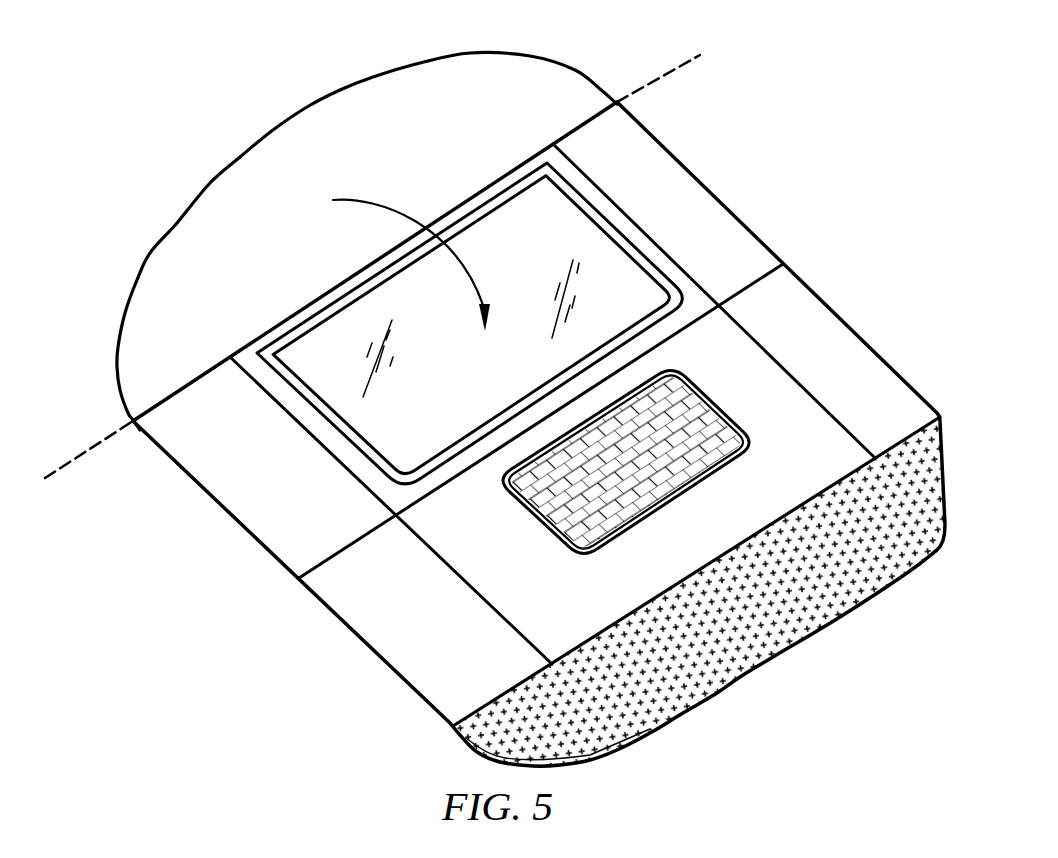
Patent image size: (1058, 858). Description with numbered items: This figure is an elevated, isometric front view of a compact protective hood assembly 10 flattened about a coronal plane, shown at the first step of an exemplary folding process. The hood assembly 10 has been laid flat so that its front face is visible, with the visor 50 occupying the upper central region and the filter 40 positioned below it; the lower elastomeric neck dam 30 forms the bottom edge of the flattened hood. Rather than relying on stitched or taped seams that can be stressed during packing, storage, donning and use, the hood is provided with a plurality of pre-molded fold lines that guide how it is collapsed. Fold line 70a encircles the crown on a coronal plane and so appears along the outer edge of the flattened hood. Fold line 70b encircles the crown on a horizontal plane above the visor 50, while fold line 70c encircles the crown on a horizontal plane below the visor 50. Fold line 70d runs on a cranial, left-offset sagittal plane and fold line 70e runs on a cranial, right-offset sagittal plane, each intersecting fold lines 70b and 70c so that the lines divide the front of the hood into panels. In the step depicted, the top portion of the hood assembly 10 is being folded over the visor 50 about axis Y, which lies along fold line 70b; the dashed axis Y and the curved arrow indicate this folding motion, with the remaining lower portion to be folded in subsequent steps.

The hood assembly 10 is at (191, 136).
The axis Y is at (664, 76).
The neck dam 30 is at (686, 689).
The filter 40 is at (718, 423).
The visor 50 is at (461, 393).
The fold line 70a is at (842, 320).
The fold line 70b is at (580, 130).
The fold line 70c is at (760, 268).
The fold line 70d is at (628, 216).
The fold line 70e is at (305, 431).